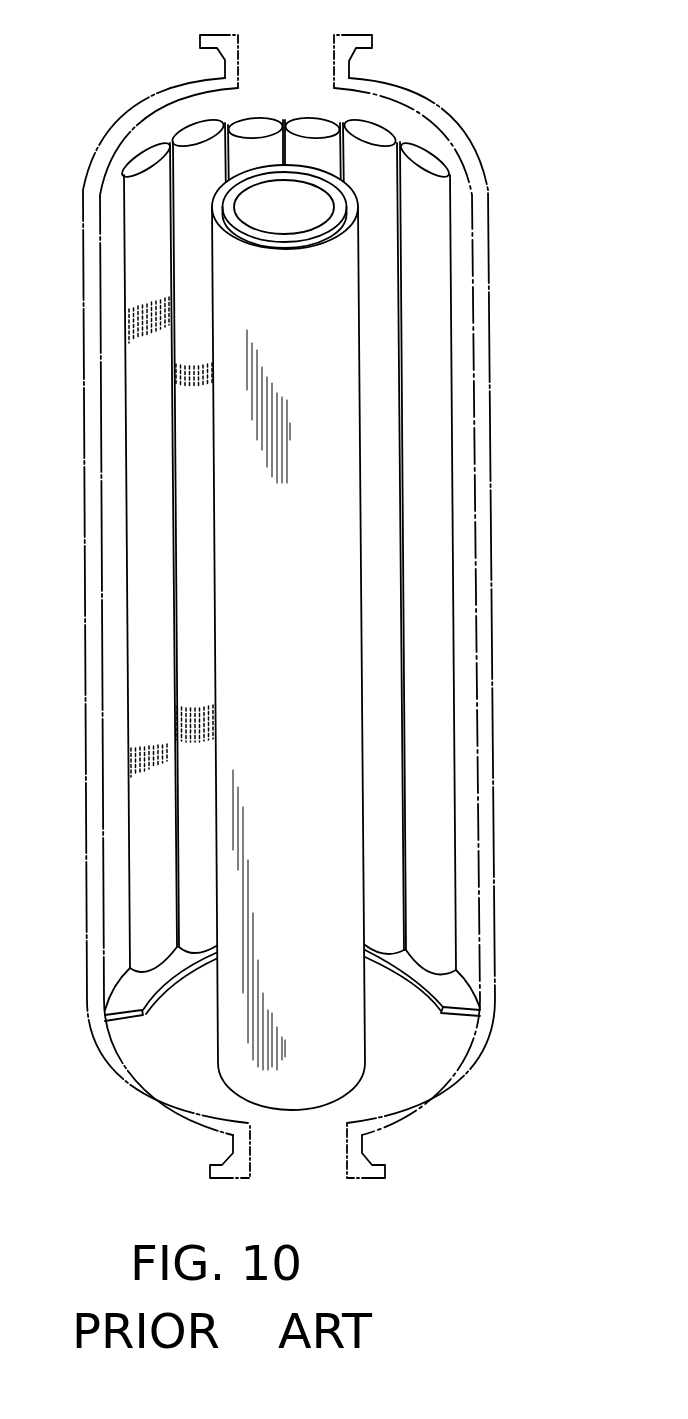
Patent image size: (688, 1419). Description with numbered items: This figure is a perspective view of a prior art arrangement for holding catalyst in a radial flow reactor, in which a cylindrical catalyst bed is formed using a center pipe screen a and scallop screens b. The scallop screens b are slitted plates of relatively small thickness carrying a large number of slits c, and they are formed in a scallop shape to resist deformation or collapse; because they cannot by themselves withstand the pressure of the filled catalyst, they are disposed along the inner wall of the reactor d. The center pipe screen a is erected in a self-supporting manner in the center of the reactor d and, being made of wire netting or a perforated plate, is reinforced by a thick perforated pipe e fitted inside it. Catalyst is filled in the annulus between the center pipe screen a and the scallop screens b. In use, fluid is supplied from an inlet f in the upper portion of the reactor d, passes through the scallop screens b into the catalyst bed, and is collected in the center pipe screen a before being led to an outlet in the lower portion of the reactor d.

The center pipe screen a is at (328, 393).
The scallop screens b is at (423, 235).
The slits c is at (128, 322).
The reactor d is at (485, 578).
The perforated pipe e is at (283, 238).
The inlet f is at (285, 58).